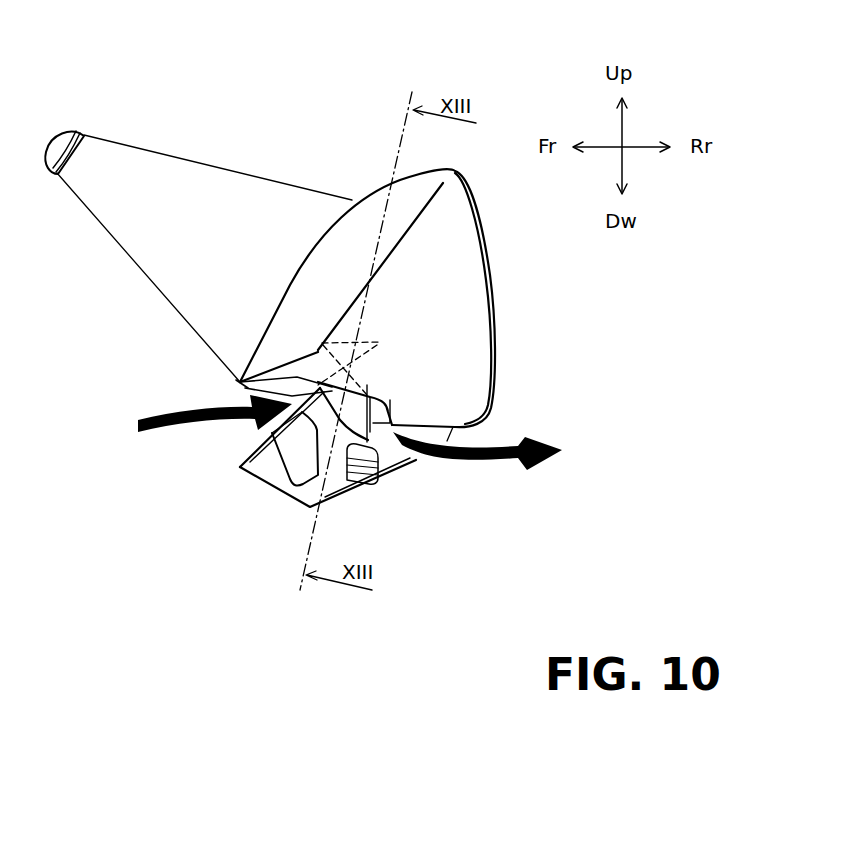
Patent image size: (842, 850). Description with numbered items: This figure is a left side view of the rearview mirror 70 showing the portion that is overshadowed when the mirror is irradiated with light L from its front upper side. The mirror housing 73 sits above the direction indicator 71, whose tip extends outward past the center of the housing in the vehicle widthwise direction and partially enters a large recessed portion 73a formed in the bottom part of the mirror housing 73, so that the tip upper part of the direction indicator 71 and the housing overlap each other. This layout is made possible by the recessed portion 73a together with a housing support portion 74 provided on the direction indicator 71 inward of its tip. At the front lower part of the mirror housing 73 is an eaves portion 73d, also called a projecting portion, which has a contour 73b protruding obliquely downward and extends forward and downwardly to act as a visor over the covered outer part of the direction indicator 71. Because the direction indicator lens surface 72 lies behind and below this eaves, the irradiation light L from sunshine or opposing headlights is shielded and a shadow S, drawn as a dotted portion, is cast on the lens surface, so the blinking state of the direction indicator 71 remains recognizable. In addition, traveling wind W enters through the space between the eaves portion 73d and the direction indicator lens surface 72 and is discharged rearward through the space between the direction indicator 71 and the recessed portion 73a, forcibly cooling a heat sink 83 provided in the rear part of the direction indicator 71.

The rearview mirror 70 is at (317, 102).
The direction indicator 71 is at (297, 493).
The direction indicator lens surface 72 is at (273, 468).
The mirror housing 73 is at (319, 267).
The recessed portion 73a is at (385, 412).
The contour 73b is at (236, 383).
The eaves portion 73d is at (259, 360).
The housing support portion 74 is at (378, 355).
The heat sink 83 is at (358, 468).
The irradiation light L is at (153, 131).
The traveling wind W is at (163, 424).
The shadow S is at (263, 430).